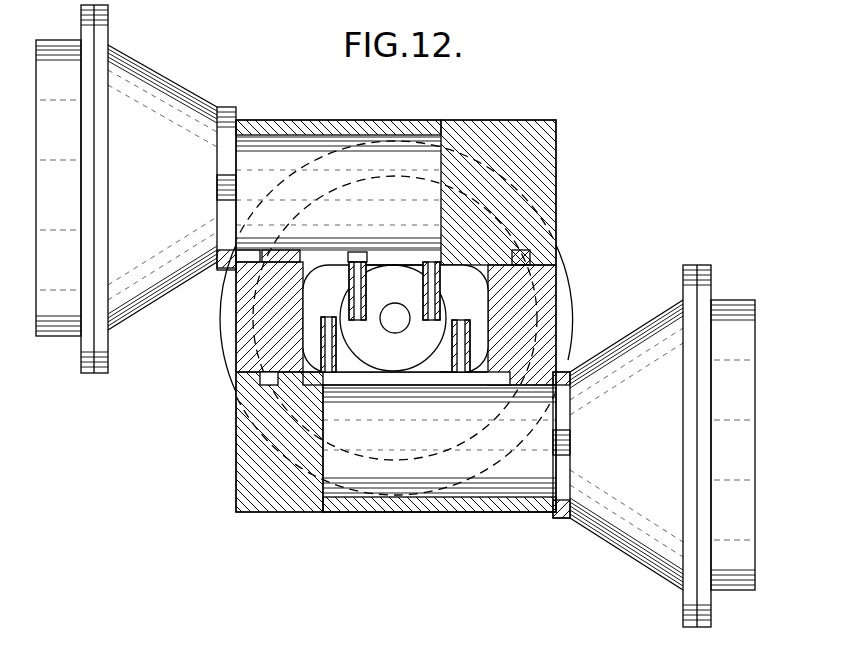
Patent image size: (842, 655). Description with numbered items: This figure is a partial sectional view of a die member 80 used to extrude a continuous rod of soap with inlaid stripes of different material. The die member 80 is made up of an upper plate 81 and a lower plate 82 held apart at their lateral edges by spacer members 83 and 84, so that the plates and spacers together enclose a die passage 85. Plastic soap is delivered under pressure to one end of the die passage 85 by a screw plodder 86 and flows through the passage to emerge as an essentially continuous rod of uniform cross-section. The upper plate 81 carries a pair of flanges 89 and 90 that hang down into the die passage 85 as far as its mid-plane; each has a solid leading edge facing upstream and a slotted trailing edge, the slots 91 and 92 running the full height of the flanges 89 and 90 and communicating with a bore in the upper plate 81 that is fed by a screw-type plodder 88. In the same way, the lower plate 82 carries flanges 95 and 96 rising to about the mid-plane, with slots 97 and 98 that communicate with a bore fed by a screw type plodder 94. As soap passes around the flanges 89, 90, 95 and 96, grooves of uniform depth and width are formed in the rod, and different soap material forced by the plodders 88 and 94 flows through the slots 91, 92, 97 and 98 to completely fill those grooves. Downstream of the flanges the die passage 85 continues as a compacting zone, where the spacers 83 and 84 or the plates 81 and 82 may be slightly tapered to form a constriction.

The die member 80 is at (571, 177).
The upper plate 81 is at (484, 130).
The lower plate 82 is at (280, 512).
The spacer member 83 is at (240, 305).
The spacer member 84 is at (540, 285).
The die passage 85 is at (345, 285).
The screw plodder 86 is at (226, 344).
The screw-type plodder 88 is at (166, 88).
The flange 89 is at (356, 300).
The flange 90 is at (413, 290).
The slot 91 is at (360, 262).
The slot 92 is at (433, 290).
The screw type plodder 94 is at (640, 345).
The flange 95 is at (341, 337).
The flange 96 is at (455, 348).
The slot 97 is at (328, 320).
The slot 98 is at (462, 322).